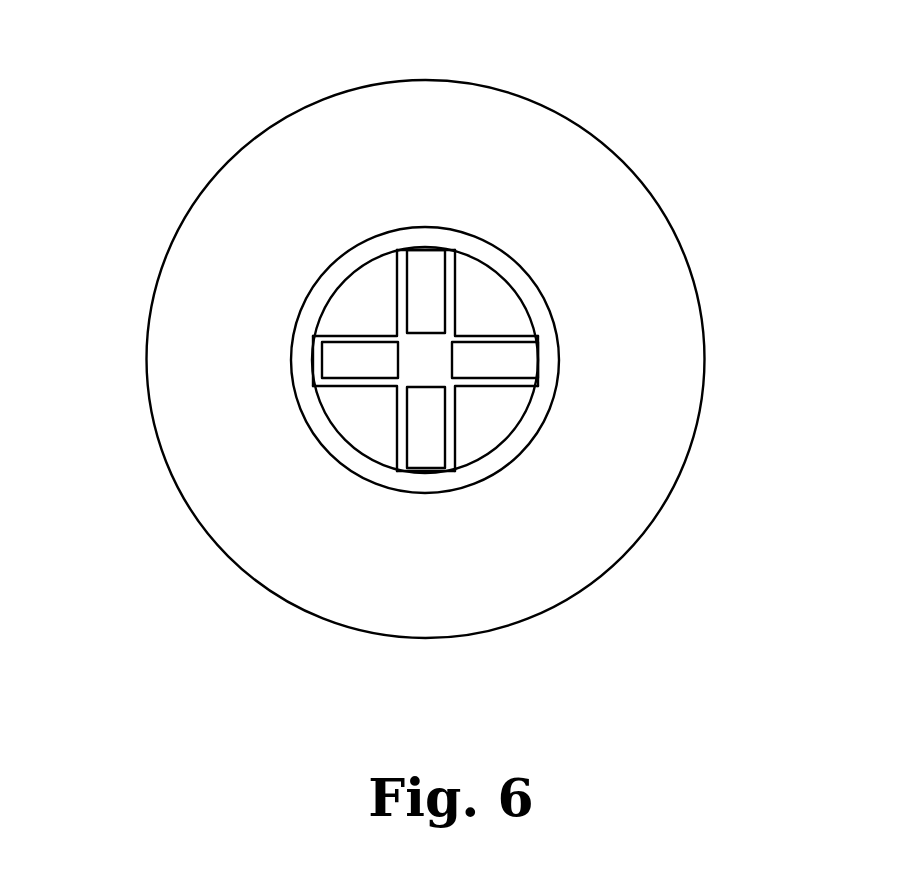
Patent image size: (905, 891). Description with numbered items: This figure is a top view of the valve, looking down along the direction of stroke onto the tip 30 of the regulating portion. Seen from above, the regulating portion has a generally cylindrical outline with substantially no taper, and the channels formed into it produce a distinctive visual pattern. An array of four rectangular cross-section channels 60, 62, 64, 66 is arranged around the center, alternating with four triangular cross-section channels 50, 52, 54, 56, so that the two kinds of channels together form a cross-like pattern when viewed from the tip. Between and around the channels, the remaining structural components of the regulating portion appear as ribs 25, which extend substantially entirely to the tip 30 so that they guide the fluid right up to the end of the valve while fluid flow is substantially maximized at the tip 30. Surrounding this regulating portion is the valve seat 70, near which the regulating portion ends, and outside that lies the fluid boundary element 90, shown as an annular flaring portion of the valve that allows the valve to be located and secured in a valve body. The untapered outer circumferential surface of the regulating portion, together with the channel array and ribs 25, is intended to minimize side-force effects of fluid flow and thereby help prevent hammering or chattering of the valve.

The ribs 25 is at (457, 277).
The tip 30 is at (421, 368).
The triangular cross-section channel 50 is at (348, 307).
The triangular cross-section channel 52 is at (478, 283).
The triangular cross-section channel 54 is at (497, 410).
The triangular cross-section channel 56 is at (396, 390).
The rectangular cross-section channel 60 is at (426, 278).
The rectangular cross-section channel 62 is at (510, 353).
The rectangular cross-section channel 64 is at (433, 448).
The rectangular cross-section channel 66 is at (333, 362).
The valve seat 70 is at (388, 241).
The fluid boundary element 90 is at (551, 153).